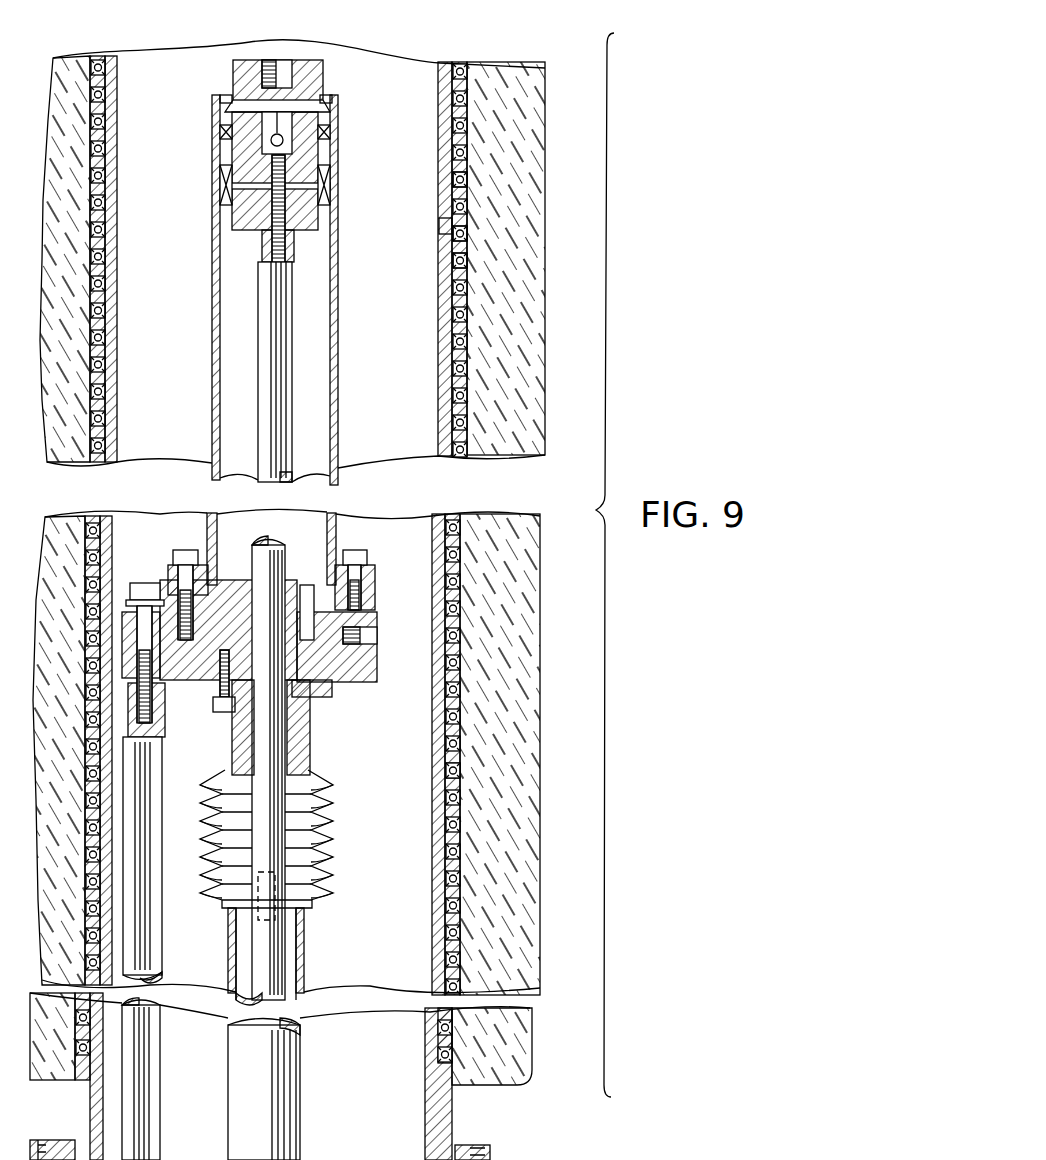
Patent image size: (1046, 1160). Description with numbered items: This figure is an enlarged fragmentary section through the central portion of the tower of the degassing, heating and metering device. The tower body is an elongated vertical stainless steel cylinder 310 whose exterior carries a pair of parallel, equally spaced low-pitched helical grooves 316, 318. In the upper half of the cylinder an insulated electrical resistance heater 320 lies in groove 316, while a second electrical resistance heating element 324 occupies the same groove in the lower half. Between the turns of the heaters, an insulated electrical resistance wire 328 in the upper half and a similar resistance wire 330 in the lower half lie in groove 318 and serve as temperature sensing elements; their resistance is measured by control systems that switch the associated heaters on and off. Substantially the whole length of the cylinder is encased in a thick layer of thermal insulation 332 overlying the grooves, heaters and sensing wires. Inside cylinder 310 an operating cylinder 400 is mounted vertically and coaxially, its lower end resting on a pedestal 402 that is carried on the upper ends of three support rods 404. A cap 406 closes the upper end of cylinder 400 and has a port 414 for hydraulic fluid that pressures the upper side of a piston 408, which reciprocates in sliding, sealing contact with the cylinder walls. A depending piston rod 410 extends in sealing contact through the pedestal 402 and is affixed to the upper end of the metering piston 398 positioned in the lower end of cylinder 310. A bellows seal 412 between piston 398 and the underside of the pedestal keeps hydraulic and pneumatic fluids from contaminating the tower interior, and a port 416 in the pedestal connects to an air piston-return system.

The cylinder 310 is at (440, 128).
The helical groove 316 is at (455, 175).
The helical groove 318 is at (440, 226).
The electrical resistance heater 320 is at (452, 150).
The second electrical resistance heating element 324 is at (440, 746).
The insulated electrical resistance wire 328 is at (455, 236).
The insulated electrical resistance wire 330 is at (462, 790).
The layer of thermal insulation 332 is at (530, 342).
The metering piston 398 is at (298, 1082).
The operating cylinder 400 is at (414, 352).
The pedestal 402 is at (358, 683).
The support rod 404 is at (190, 962).
The cap 406 is at (317, 56).
The piston 408 is at (312, 140).
The piston rod 410 is at (258, 328).
The bellows seal 412 is at (216, 775).
The port 414 is at (285, 62).
The port 416 is at (377, 635).